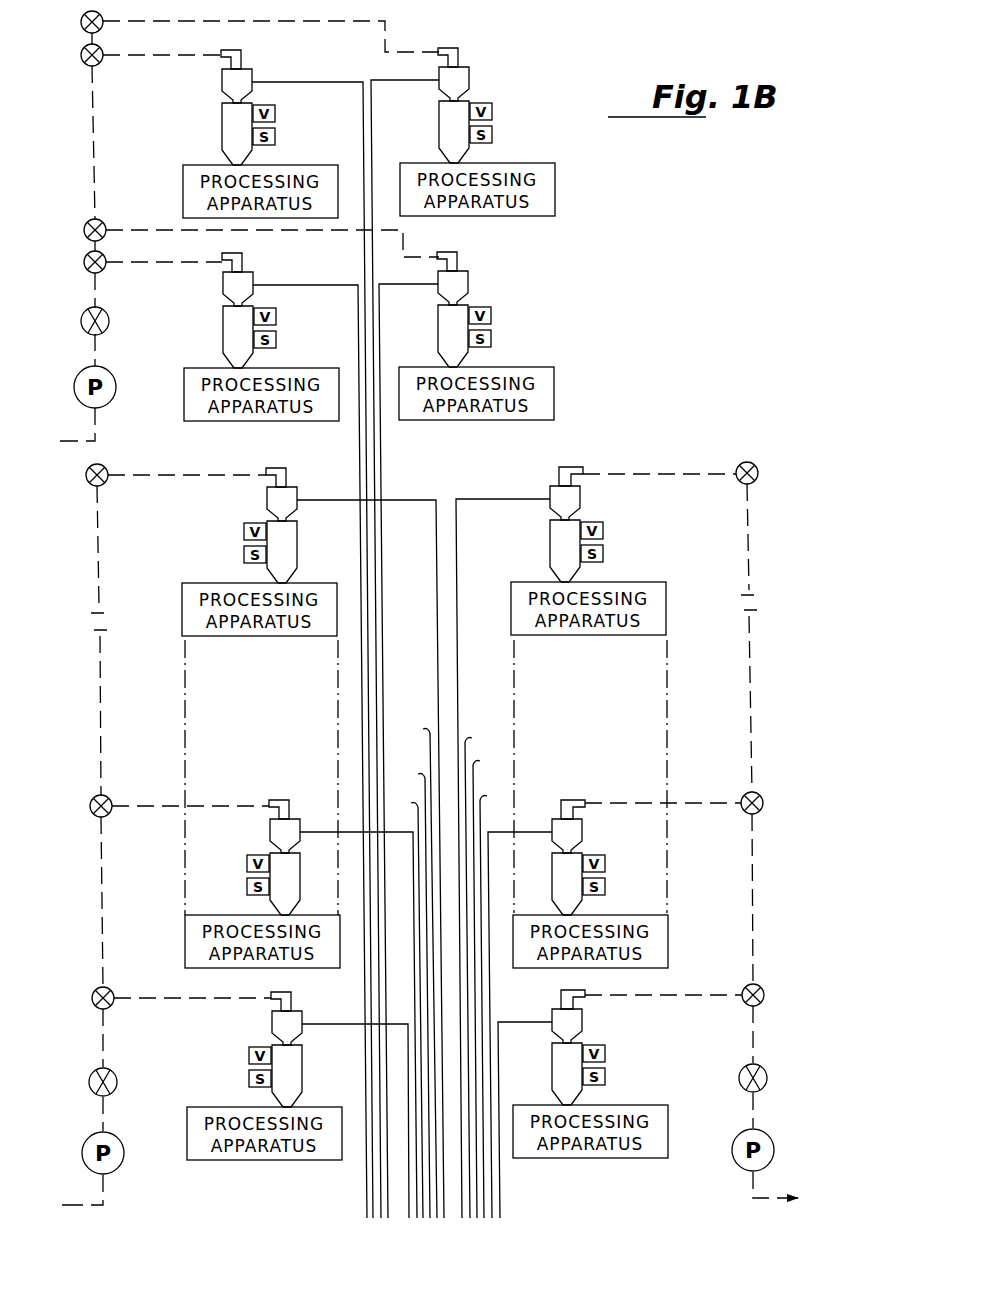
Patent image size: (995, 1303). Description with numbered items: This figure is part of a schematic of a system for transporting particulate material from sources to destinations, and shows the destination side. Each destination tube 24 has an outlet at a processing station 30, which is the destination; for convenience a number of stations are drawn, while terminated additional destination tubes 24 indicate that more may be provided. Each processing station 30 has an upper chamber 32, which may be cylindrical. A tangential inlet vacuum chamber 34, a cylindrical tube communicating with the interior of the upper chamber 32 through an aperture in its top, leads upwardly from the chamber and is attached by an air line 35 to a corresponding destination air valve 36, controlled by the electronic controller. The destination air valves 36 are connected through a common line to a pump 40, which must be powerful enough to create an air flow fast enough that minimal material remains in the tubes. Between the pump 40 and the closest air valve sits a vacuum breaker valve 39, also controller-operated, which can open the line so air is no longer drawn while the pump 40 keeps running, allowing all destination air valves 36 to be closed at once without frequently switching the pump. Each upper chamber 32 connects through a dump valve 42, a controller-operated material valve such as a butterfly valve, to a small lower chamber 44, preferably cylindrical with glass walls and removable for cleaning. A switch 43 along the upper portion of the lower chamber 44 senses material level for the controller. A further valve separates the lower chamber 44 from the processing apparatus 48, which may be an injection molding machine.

The destination tube 24 is at (482, 802).
The processing station 30 is at (214, 113).
The upper chamber 32 is at (583, 1018).
The tangential inlet vacuum chamber 34 is at (562, 1000).
The air line 35 is at (707, 995).
The destination air valve 36 is at (762, 985).
The vacuum breaker valve 39 is at (767, 1070).
The pump 40 is at (774, 1142).
The dump valve 42 is at (606, 1045).
The switch 43 is at (606, 1081).
The lower chamber 44 is at (552, 1059).
The processing apparatus 48 is at (670, 1115).